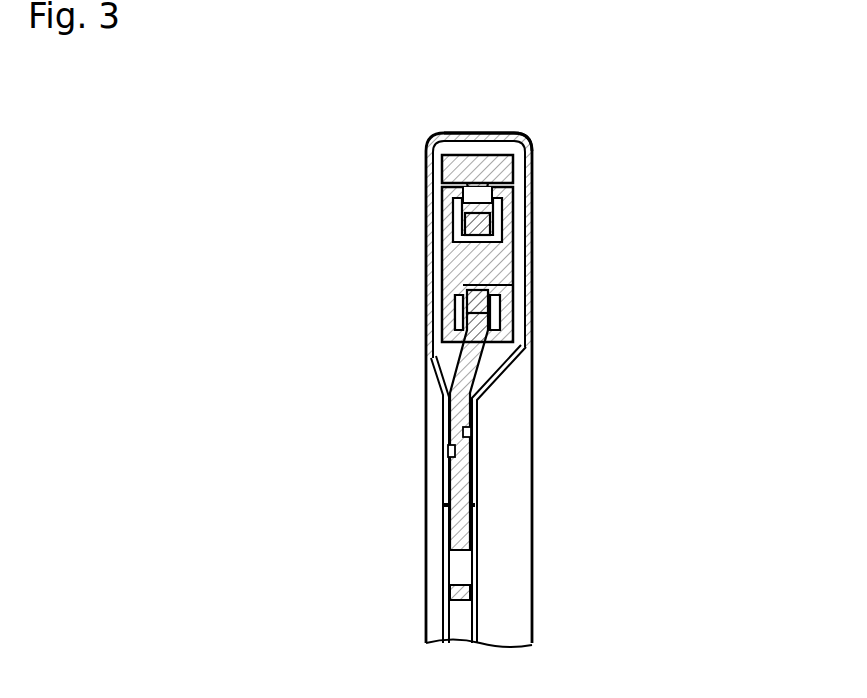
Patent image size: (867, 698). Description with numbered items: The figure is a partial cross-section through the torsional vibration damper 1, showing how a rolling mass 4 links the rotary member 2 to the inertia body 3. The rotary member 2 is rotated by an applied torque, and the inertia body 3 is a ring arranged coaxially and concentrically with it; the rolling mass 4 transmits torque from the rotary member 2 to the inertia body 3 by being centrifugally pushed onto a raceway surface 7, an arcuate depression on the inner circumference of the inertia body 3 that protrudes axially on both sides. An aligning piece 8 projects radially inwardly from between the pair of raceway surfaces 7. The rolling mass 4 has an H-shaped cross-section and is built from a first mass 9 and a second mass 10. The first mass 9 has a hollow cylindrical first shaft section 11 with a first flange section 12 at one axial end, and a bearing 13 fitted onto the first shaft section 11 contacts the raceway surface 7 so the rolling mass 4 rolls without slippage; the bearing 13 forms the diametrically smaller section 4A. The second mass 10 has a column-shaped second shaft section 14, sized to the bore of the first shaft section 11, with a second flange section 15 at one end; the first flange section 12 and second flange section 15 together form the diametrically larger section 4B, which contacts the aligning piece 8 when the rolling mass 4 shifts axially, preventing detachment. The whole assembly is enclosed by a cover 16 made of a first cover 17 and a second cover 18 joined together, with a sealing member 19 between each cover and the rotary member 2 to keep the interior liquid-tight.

The torsional vibration damper 1 is at (728, 203).
The rotary member 2 is at (458, 493).
The inertia body 3 is at (440, 194).
The rolling mass 4 is at (503, 264).
The diametrically smaller section 4A is at (480, 300).
The diametrically larger section 4B is at (507, 215).
The raceway surface 7 is at (462, 191).
The aligning piece 8 is at (458, 206).
The first mass 9 is at (580, 263).
The second mass 10 is at (450, 433).
The first shaft section 11 is at (485, 241).
The first flange section 12 is at (556, 263).
The bearing 13 is at (544, 448).
The second shaft section 14 is at (482, 267).
The second flange section 15 is at (445, 333).
The cover 16 is at (554, 381).
The first cover 17 is at (456, 141).
The second cover 18 is at (531, 165).
The sealing member 19 is at (463, 431).